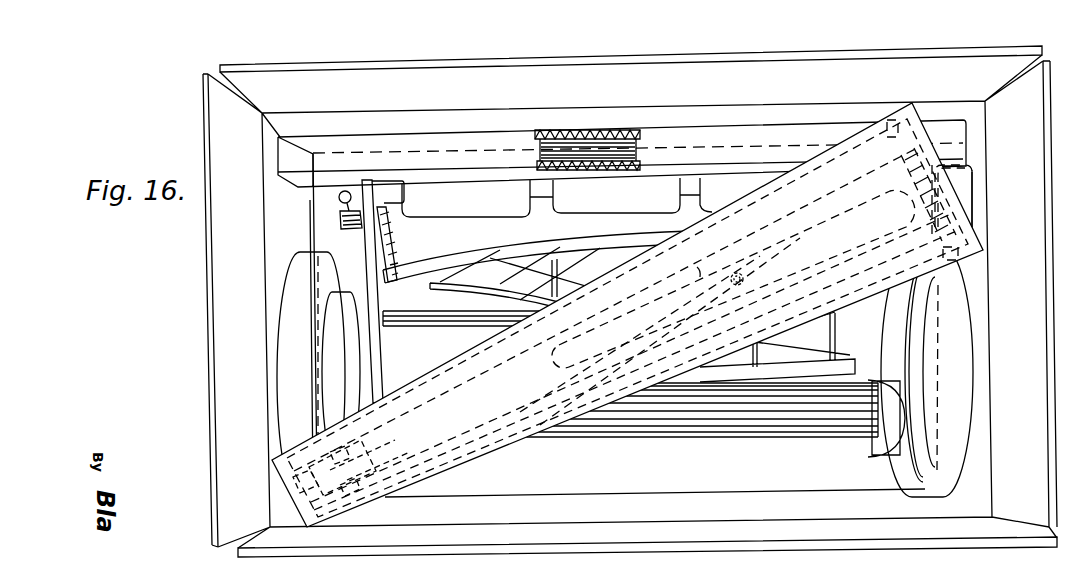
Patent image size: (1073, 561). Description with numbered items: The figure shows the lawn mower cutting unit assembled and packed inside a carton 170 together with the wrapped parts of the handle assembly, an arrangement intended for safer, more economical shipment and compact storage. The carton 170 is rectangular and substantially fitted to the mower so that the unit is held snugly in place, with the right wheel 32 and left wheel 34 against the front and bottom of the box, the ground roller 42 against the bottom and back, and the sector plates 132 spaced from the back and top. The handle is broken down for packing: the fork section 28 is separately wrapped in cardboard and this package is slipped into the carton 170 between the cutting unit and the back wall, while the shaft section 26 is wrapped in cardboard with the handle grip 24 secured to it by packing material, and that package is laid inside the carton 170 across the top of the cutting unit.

The carton 170 is at (197, 369).
The handle grip 24 is at (568, 362).
The shaft section 26 is at (447, 438).
The right fork 28 is at (596, 150).
The right wheel 32 is at (293, 393).
The left wheel 34 is at (962, 448).
The ground roller 42 is at (466, 203).
The sector plate 132 is at (368, 174).